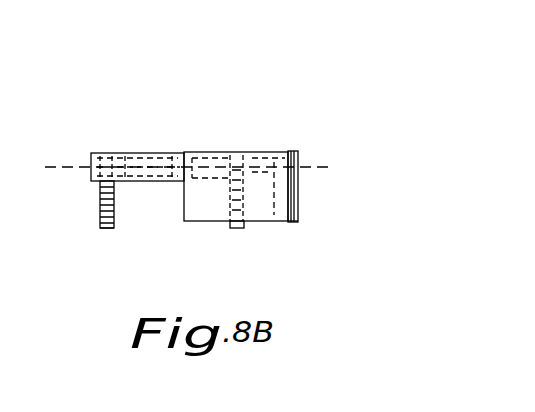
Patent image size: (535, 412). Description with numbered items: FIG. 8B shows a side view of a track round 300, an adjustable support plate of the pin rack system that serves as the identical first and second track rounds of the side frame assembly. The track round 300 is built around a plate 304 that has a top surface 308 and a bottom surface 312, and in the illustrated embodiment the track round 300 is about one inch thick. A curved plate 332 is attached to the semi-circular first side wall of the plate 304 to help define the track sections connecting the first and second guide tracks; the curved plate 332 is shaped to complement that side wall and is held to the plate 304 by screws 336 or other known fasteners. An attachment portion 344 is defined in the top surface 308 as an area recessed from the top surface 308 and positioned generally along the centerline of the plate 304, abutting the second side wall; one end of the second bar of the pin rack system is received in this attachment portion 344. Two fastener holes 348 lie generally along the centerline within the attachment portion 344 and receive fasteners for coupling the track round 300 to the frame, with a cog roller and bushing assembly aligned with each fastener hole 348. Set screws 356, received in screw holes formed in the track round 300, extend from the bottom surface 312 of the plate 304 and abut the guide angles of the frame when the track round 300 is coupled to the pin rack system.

The track round 300 is at (96, 133).
The plate 304 is at (158, 153).
The top surface 308 is at (96, 153).
The bottom surface 312 is at (146, 182).
The curved plate 332 is at (287, 222).
The screws 336 is at (286, 151).
The attachment portion 344 is at (143, 153).
The fastener holes 348 is at (98, 200).
The set screws 356 is at (100, 226).